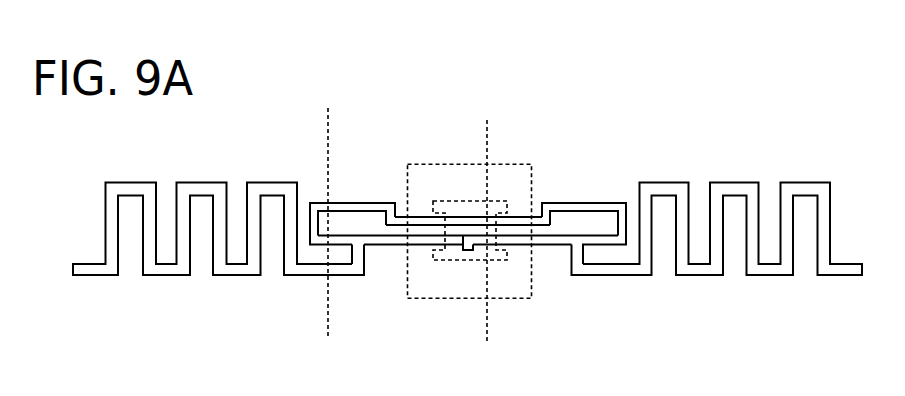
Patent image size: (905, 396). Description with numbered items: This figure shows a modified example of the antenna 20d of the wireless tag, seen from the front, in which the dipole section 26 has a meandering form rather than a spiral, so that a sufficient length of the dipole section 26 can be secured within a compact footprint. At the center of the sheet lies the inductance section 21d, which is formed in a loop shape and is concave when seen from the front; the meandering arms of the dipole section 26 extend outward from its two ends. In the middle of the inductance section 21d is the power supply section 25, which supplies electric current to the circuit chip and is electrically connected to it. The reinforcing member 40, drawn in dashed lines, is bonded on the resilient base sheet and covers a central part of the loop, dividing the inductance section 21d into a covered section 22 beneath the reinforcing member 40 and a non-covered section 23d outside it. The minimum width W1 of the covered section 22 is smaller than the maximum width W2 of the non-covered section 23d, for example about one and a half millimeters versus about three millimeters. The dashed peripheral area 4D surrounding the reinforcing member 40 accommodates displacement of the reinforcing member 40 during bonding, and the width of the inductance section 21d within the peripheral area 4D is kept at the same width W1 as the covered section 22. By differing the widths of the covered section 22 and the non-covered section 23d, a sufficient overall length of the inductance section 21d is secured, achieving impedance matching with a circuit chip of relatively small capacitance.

The antenna 20d is at (467, 200).
The inductance section 21d is at (594, 203).
The non-covered section 23d is at (717, 242).
The dipole section 26 is at (712, 266).
The peripheral area 4D is at (518, 164).
The reinforcing member 40 is at (432, 262).
The covered section 22 is at (453, 240).
The power supply section 25 is at (465, 250).
The minimum width of covered section W1 is at (493, 259).
The maximum width of non-covered section W2 is at (334, 260).